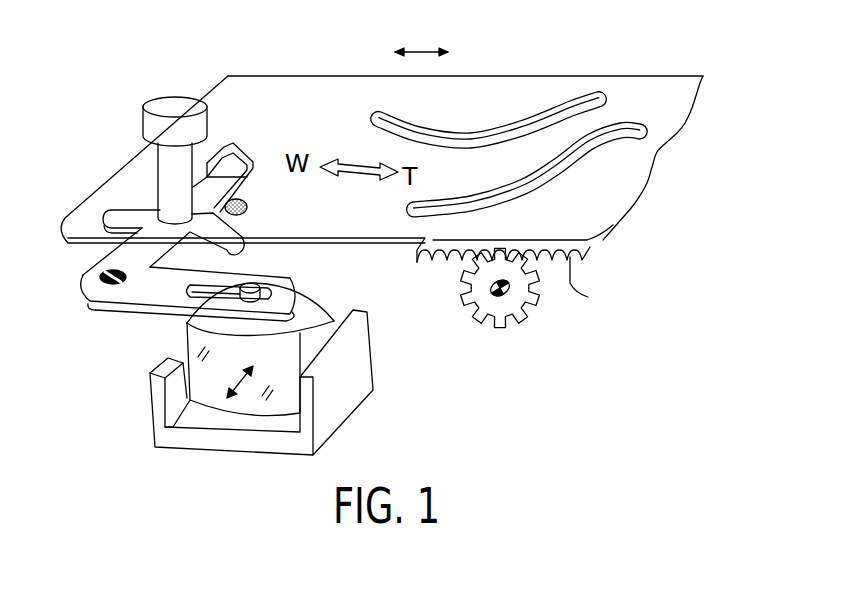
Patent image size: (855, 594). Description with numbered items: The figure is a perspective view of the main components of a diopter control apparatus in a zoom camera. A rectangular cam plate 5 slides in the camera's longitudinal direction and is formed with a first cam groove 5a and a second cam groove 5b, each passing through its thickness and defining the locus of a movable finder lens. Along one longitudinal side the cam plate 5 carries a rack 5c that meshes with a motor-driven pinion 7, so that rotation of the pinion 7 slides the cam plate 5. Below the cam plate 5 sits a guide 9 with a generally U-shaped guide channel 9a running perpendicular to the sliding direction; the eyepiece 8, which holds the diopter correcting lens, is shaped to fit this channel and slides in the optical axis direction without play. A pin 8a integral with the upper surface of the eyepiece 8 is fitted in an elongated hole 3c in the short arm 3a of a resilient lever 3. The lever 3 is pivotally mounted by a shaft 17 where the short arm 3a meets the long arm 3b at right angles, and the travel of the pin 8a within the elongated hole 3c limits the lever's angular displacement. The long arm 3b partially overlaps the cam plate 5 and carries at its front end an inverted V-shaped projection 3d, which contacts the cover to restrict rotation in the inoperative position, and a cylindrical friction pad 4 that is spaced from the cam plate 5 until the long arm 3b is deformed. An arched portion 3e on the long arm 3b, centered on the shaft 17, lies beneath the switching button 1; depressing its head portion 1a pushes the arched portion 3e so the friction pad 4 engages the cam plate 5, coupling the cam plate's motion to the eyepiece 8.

The switching button 1 is at (131, 114).
The head portion 1a is at (163, 110).
The lever 3 is at (205, 239).
The short arm 3a is at (236, 327).
The long arm 3b is at (105, 252).
The elongated hole 3c is at (195, 298).
The inverted V-shaped projection 3d is at (227, 143).
The arched portion 3e is at (118, 213).
The friction pad 4 is at (248, 205).
The cam plate 5 is at (283, 93).
The first cam groove 5a is at (499, 134).
The second cam groove 5b is at (582, 152).
The rack 5c is at (594, 282).
The pinion 7 is at (480, 298).
The eyepiece 8 is at (212, 392).
The pin 8a is at (258, 285).
The guide 9 is at (234, 399).
The guide channel 9a is at (190, 423).
The shaft 17 is at (98, 279).